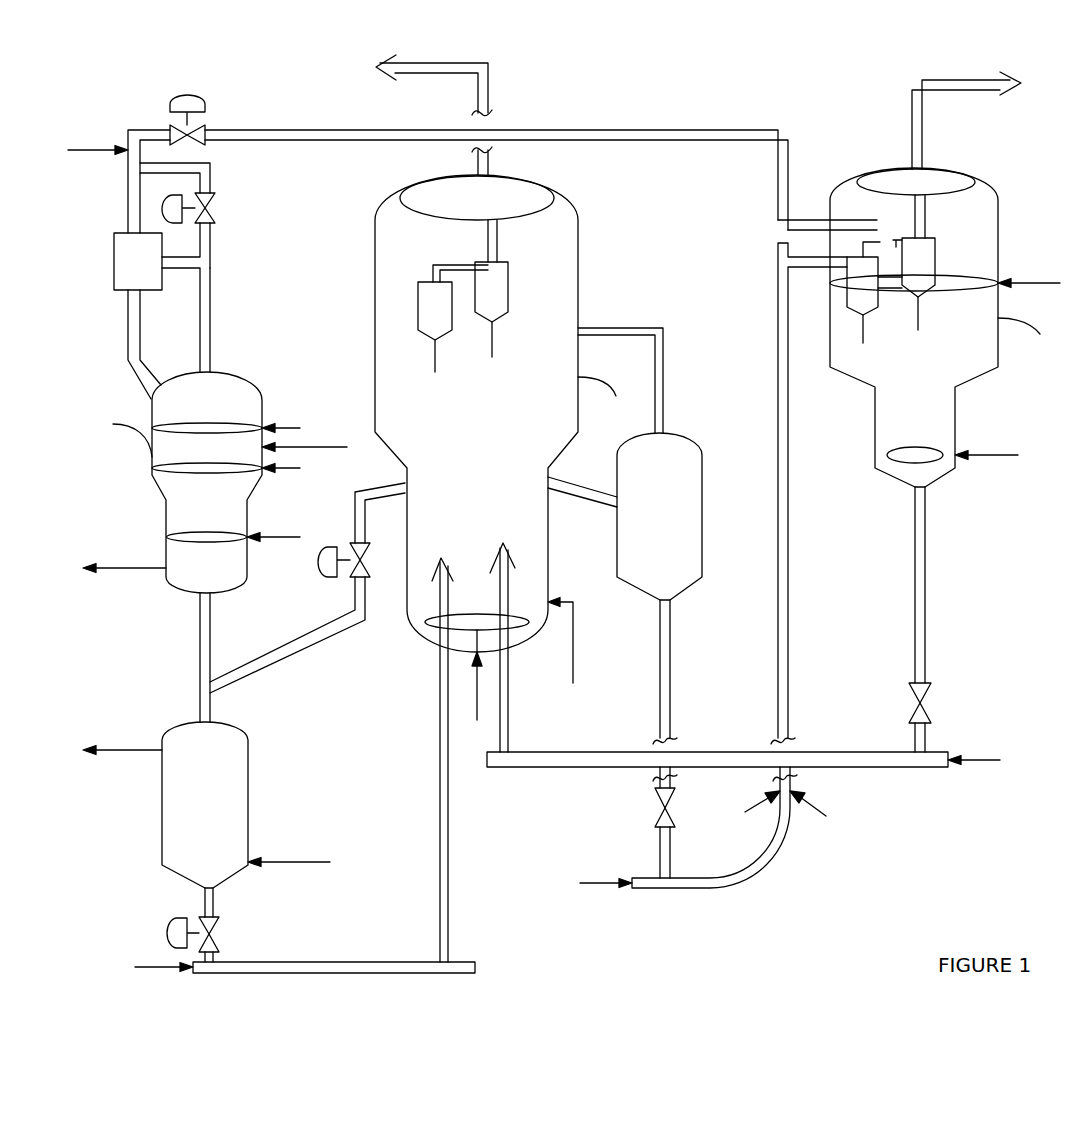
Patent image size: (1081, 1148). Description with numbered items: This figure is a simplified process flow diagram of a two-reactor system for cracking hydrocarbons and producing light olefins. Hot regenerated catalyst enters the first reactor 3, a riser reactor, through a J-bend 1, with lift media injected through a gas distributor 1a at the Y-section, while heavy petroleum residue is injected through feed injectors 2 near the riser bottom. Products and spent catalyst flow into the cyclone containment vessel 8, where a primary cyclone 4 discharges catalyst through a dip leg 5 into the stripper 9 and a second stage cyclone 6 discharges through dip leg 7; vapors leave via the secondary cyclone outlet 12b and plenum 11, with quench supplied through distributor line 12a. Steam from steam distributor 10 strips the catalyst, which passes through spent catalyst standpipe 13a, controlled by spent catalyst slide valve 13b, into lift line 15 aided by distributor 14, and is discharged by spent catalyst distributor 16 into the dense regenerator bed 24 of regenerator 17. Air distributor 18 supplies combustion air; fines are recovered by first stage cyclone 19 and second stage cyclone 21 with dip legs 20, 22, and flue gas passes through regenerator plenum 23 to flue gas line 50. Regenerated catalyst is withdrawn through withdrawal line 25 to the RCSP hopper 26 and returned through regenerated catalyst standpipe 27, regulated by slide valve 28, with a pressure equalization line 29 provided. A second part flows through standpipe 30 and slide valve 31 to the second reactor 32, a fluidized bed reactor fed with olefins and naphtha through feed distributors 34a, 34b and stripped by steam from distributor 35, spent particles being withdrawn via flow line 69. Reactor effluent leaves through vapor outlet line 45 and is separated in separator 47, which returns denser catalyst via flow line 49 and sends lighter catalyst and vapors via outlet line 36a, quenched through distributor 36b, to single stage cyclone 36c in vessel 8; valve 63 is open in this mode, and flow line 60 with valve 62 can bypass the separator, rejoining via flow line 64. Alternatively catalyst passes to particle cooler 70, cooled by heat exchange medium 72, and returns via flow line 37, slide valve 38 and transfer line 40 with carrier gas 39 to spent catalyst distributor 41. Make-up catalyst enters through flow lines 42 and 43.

The J-bend 1 is at (714, 829).
The gas distributor 1a is at (605, 873).
The feed injectors 2 is at (790, 812).
The first reactor 3 is at (809, 493).
The primary cyclone 4 is at (863, 278).
The primary cyclone dip leg 5 is at (858, 335).
The second stage cyclone 6 is at (906, 246).
The dip leg 7 is at (928, 317).
The cyclone containment vessel 8 is at (942, 327).
The stripper 9 is at (918, 408).
The steam distributor 10 is at (952, 445).
The plenum 11 is at (916, 182).
The distributor line 12a is at (952, 274).
The secondary cyclone outlet 12b is at (966, 111).
The spent catalyst standpipe 13a is at (941, 585).
The spent catalyst slide valve 13b is at (938, 717).
The distributor 14 is at (978, 750).
The lift line 15 is at (717, 748).
The spent catalyst distributor 16 is at (495, 644).
The regenerator 17 is at (605, 396).
The air distributor 18 is at (477, 667).
The first stage cyclone 19 is at (453, 302).
The dip leg 20 is at (424, 356).
The second stage cyclone 21 is at (491, 271).
The dip leg 22 is at (505, 339).
The regenerator plenum 23 is at (477, 183).
The dense regenerator bed 24 is at (476, 413).
The withdrawal line 25 is at (582, 484).
The RCSP hopper 26 is at (659, 516).
The regenerated catalyst standpipe 27 is at (655, 672).
The slide valve 28 is at (676, 822).
The pressure equalization line 29 is at (620, 370).
The standpipe 30 is at (376, 505).
The slide valve 31 is at (300, 618).
The second reactor 32 is at (174, 482).
The feed distributor 34a is at (236, 478).
The feed distributor 34b is at (236, 418).
The distributor 35 is at (234, 552).
The outlet line 36a is at (450, 171).
The distributor 36b is at (94, 141).
The single stage cyclone 36c is at (829, 214).
The flow line 37 is at (225, 902).
The slide valve 38 is at (205, 939).
The carrier gas 39 is at (164, 956).
The transfer line 40 is at (334, 954).
The spent catalyst distributor 41 is at (436, 752).
The flow line 42 is at (560, 641).
The flow line 43 is at (306, 438).
The vapor outlet line 45 is at (186, 320).
The separator 47 is at (138, 261).
The flow line 49 is at (131, 344).
The flue gas line 50 is at (434, 85).
The flow line 60 is at (201, 245).
The flow control valve 62 is at (200, 208).
The valve 63 is at (187, 99).
The flow line 64 is at (175, 159).
The flow line 69 is at (124, 560).
The particle cooler 70 is at (205, 740).
The heat exchange medium 72 is at (206, 796).